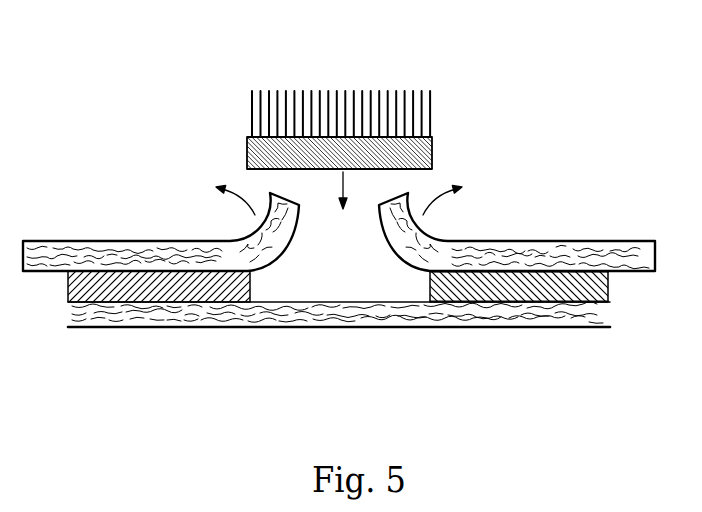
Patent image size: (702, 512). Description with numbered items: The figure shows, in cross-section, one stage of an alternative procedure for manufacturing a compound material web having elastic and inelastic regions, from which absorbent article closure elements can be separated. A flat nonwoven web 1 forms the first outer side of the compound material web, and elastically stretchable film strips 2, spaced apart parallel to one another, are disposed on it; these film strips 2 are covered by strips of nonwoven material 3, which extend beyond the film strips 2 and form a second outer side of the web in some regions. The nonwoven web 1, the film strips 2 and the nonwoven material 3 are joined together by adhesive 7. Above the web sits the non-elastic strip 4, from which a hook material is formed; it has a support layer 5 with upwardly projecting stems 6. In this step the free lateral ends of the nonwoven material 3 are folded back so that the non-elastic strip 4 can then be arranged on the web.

The nonwoven web 1 is at (353, 310).
The elastically stretchable film strips 2 is at (610, 281).
The nonwoven material 3 is at (530, 243).
The non-elastic strip 4 is at (351, 125).
The support layer 5 is at (375, 163).
The stems 6 is at (257, 120).
The adhesive 7 is at (592, 270).